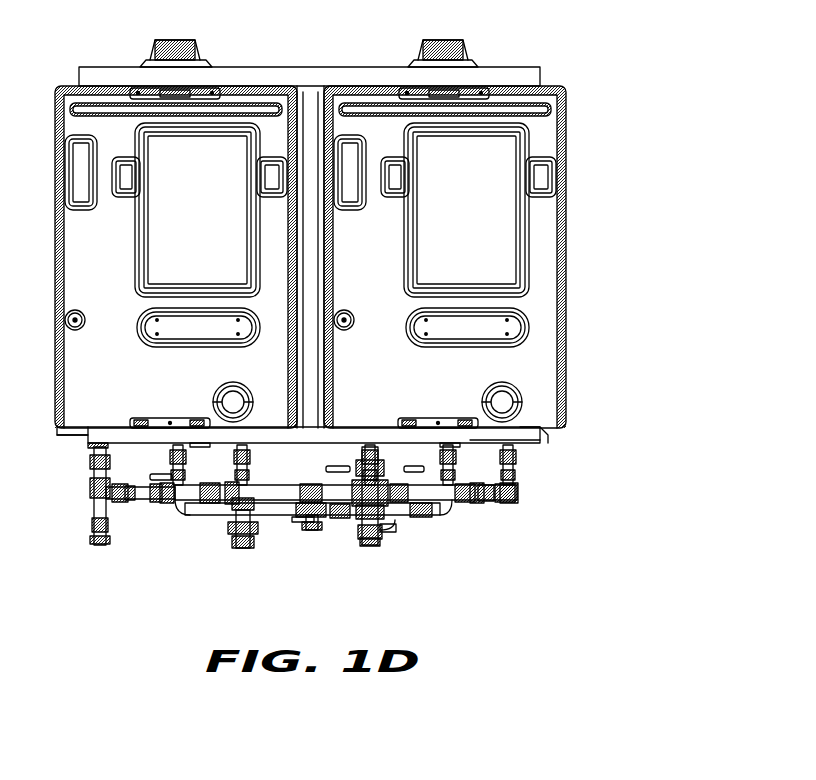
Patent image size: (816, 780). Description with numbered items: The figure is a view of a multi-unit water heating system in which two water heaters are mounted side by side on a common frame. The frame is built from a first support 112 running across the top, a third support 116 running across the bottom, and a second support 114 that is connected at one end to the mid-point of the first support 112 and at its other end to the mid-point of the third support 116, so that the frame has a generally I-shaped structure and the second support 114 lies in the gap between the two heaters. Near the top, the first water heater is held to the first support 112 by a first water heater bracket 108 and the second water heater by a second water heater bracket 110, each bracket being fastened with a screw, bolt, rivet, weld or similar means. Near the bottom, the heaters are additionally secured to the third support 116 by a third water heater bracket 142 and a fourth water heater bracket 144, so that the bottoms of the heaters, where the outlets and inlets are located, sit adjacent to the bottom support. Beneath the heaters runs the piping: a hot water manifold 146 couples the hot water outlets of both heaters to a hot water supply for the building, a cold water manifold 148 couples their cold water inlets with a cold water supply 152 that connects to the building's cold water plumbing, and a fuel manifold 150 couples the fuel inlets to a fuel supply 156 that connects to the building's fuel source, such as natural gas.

The first water heater bracket 108 is at (478, 90).
The second water heater bracket 110 is at (140, 88).
The first support 112 is at (336, 66).
The second support 114 is at (312, 263).
The third support 116 is at (522, 434).
The third water heater bracket 142 is at (437, 418).
The fourth water heater bracket 144 is at (165, 418).
The hot water manifold 146 is at (486, 492).
The cold water manifold 148 is at (418, 512).
The fuel manifold 150 is at (120, 498).
The cold water supply 152 is at (310, 520).
The fuel supply 156 is at (226, 540).